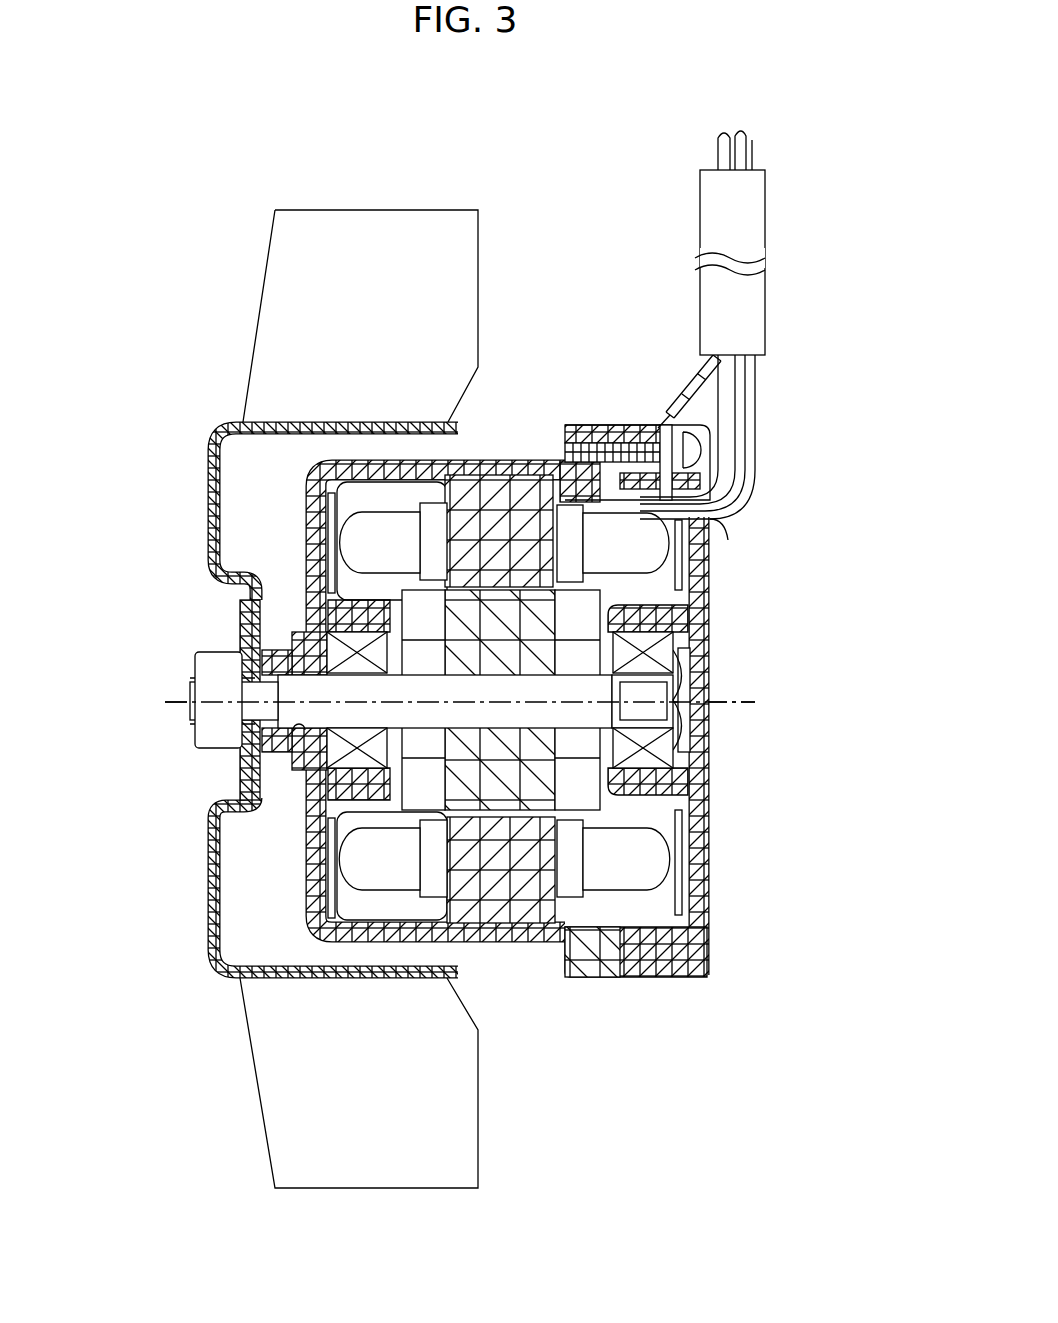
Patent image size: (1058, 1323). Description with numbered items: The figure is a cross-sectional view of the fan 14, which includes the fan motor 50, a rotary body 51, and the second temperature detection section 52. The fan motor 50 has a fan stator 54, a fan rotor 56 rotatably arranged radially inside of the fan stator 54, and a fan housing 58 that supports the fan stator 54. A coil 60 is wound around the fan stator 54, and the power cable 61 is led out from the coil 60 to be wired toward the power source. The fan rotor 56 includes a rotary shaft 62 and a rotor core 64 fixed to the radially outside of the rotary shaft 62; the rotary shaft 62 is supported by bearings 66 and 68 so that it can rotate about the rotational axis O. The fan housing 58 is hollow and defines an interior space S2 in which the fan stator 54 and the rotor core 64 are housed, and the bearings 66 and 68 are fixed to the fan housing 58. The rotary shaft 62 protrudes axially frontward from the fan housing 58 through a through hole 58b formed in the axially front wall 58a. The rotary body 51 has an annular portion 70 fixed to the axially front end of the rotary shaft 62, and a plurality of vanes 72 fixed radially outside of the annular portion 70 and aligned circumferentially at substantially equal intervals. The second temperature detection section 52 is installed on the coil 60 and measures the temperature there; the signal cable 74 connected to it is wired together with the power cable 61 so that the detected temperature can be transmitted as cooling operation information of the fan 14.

The fan 14 is at (861, 109).
The fan motor 50 is at (530, 960).
The rotary body 51 is at (262, 654).
The second temperature detection section 52 is at (612, 502).
The fan stator 54 is at (480, 545).
The fan rotor 56 is at (391, 601).
The fan housing 58 is at (400, 660).
The axially front wall 58a is at (318, 870).
The through hole 58b is at (307, 737).
The coil 60 is at (359, 558).
The power cable 61 is at (758, 436).
The rotary shaft 62 is at (517, 715).
The rotor core 64 is at (480, 642).
The bearing 66 is at (352, 762).
The bearing 68 is at (645, 760).
The annular portion 70 is at (212, 487).
The vanes 72 is at (354, 228).
The signal cable 74 is at (606, 490).
The interior space S2 is at (613, 603).
The rotational axis O is at (742, 702).